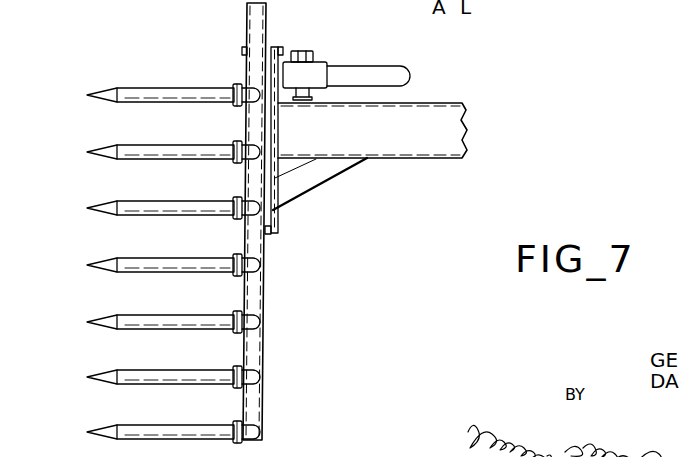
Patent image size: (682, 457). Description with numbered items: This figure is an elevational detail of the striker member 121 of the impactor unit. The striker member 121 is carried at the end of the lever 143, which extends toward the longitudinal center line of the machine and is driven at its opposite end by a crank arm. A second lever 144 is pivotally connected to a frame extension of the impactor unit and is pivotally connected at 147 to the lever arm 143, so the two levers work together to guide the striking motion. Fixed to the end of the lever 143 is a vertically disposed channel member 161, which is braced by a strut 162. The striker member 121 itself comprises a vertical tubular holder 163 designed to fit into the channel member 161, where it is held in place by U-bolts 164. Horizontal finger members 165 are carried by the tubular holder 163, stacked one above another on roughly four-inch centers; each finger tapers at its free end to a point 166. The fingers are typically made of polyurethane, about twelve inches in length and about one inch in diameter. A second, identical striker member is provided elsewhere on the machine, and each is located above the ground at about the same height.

The striker member 121 is at (272, 292).
The lever 143 is at (440, 103).
The lever 144 is at (398, 63).
The pivotal connection 147 is at (310, 51).
The channel member 161 is at (277, 173).
The strut 162 is at (352, 168).
The tubular holder 163 is at (263, 354).
The U-bolts 164 is at (279, 48).
The finger members 165 is at (190, 157).
The point 166 is at (90, 152).